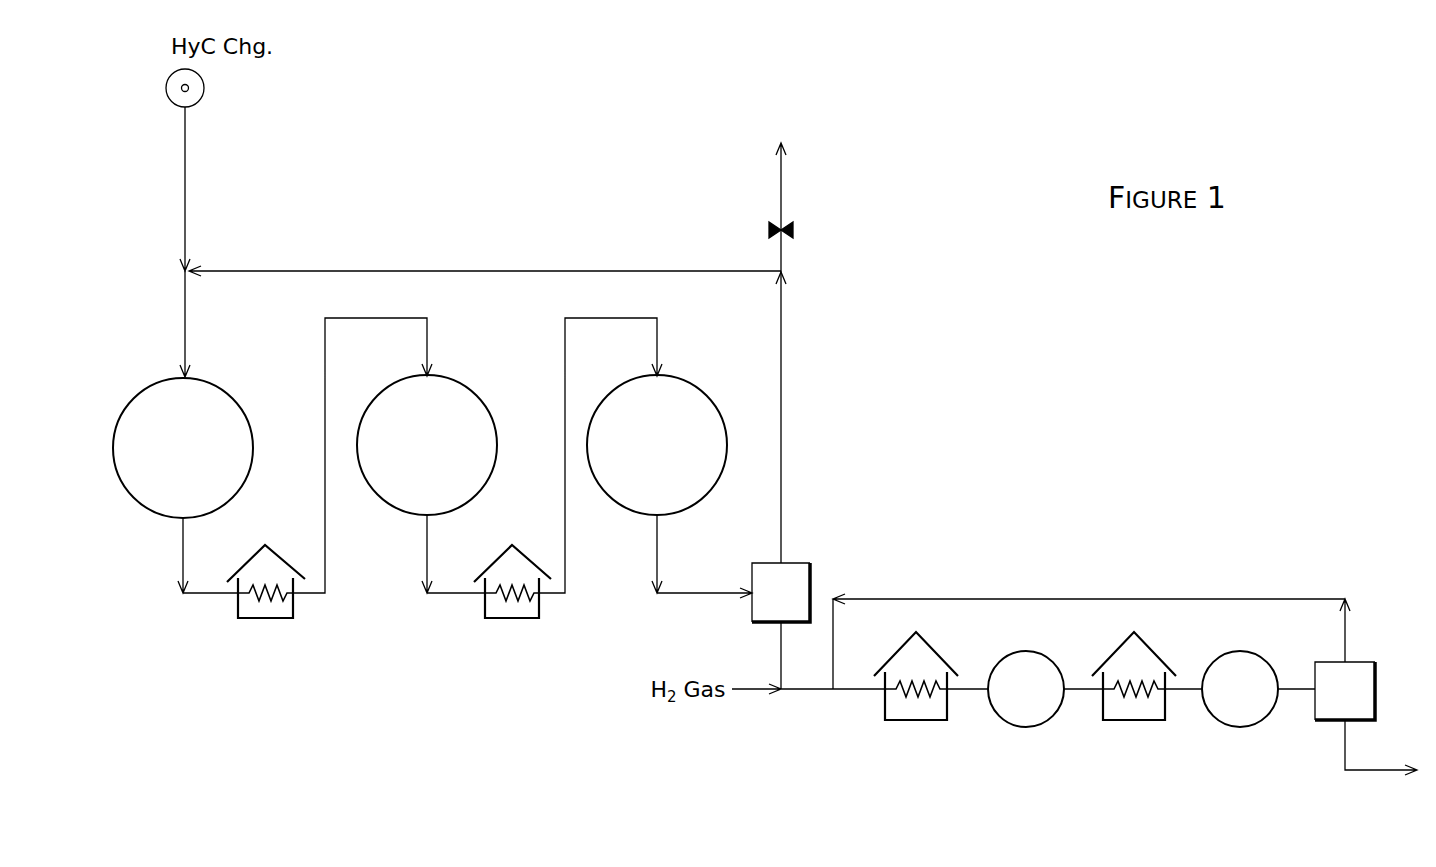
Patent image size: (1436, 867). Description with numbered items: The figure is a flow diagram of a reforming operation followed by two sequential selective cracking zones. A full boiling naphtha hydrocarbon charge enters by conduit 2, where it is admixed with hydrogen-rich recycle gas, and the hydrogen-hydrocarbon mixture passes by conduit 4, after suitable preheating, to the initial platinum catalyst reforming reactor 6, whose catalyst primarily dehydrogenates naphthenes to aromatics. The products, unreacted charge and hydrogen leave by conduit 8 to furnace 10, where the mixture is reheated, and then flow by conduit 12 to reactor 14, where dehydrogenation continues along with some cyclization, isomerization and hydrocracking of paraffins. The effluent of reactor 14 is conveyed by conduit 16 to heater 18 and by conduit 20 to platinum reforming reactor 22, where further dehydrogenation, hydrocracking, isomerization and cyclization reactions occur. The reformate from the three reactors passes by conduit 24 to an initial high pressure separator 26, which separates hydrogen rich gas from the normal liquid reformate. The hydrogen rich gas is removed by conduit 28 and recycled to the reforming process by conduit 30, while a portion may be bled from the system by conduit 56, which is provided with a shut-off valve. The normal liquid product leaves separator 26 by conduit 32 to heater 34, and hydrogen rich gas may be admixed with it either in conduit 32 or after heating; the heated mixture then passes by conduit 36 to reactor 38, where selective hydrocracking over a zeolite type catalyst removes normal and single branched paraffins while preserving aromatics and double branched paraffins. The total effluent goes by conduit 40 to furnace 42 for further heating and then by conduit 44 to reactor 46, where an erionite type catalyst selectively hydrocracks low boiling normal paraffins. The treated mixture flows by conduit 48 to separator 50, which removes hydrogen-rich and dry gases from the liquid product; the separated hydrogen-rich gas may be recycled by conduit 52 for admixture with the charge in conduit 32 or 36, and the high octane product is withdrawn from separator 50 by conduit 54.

The conduit 2 is at (188, 157).
The conduit 4 is at (183, 306).
The platinum catalyst reforming reactor 6 is at (172, 430).
The conduit 8 is at (201, 598).
The furnace 10 is at (266, 622).
The conduit 12 is at (325, 490).
The reactor 14 is at (412, 428).
The conduit 16 is at (446, 598).
The heater 18 is at (520, 625).
The conduit 20 is at (565, 495).
The platinum reforming reactor 22 is at (641, 428).
The conduit 24 is at (681, 598).
The high pressure separator 26 is at (781, 592).
The conduit 28 is at (785, 430).
The conduit 30 is at (548, 270).
The conduit 32 is at (812, 697).
The heater 34 is at (912, 722).
The conduit 36 is at (972, 694).
The reactor 38 is at (1025, 730).
The conduit 40 is at (1085, 694).
The furnace 42 is at (1138, 725).
The conduit 44 is at (1185, 695).
The reactor 46 is at (1240, 727).
The conduit 48 is at (1295, 695).
The separator 50 is at (1345, 691).
The conduit 52 is at (1175, 598).
The conduit 54 is at (1375, 772).
The conduit 56 is at (797, 230).